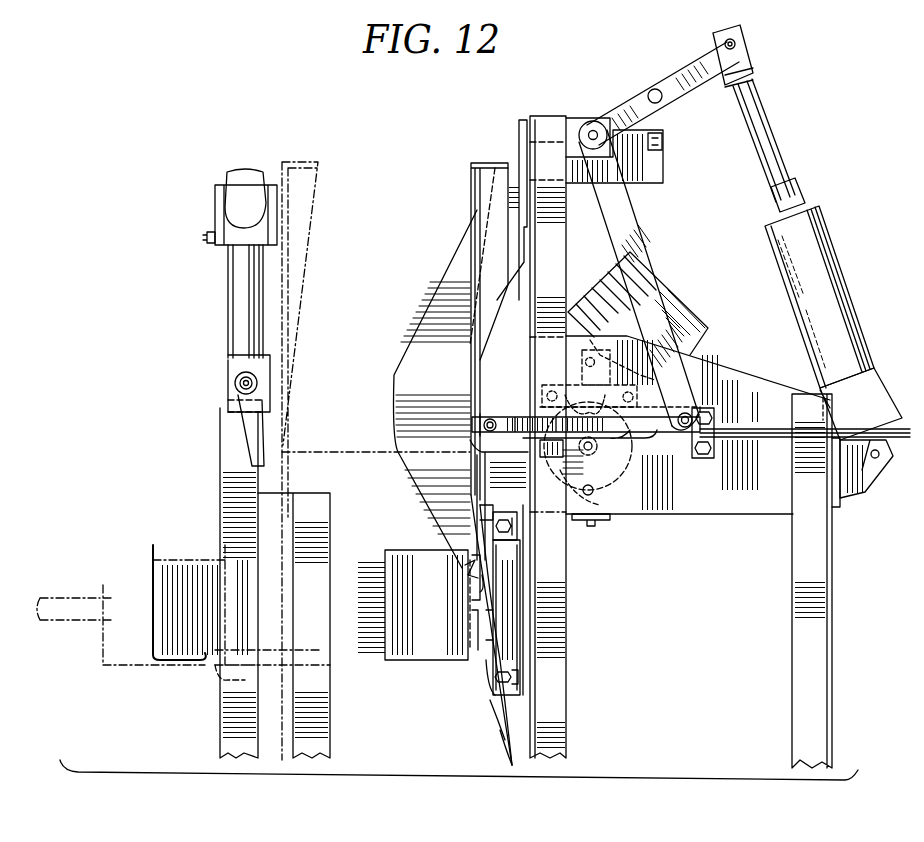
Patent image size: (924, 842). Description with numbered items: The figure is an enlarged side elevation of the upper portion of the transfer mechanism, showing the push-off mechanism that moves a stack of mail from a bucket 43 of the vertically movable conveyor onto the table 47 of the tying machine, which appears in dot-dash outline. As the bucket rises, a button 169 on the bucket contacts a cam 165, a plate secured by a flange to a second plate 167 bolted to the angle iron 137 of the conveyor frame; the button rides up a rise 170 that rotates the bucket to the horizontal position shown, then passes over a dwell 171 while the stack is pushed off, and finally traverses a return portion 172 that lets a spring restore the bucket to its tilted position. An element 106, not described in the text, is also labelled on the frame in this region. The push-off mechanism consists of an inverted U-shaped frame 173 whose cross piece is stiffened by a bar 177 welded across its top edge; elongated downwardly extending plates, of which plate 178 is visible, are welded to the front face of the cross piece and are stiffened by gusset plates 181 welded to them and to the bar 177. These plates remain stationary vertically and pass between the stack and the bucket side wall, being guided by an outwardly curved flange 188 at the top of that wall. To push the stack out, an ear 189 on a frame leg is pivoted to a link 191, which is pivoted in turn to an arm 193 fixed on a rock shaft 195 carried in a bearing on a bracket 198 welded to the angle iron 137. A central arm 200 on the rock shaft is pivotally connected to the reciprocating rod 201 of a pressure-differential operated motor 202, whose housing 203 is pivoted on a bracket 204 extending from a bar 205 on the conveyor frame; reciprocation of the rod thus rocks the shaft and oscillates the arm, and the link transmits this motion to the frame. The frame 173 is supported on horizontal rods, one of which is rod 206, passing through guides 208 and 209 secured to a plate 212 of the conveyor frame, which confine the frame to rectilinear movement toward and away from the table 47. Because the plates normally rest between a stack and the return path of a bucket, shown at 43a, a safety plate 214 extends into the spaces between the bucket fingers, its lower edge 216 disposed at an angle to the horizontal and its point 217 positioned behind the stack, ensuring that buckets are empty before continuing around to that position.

The bucket 43 is at (447, 622).
The bucket in return-path position 43a is at (665, 288).
The table 47 is at (312, 656).
The plate 106 is at (520, 655).
The angle iron 137 is at (548, 712).
The cam 165 is at (479, 710).
The second plate 167 is at (515, 595).
The button 169 is at (530, 565).
The rise 170 is at (498, 738).
The dwell 171 is at (512, 650).
The return portion 172 is at (510, 445).
The inverted U-shaped frame 173 is at (470, 266).
The bar 177 is at (318, 164).
The elongated downwardly extending plate 178 is at (428, 490).
The gusset plate 181 is at (492, 215).
The outwardly curved flange 188 is at (470, 572).
The ear 189 is at (480, 420).
The link 191 is at (652, 440).
The arm 193 is at (620, 223).
The rock shaft 195 is at (594, 132).
The bracket 198 is at (577, 128).
The arm 200 is at (683, 40).
The reciprocating rod 201 is at (772, 136).
The pressure-differential operated motor 202 is at (822, 272).
The housing 203 is at (884, 395).
The bracket 204 is at (868, 482).
The bar 205 is at (840, 500).
The rod 206 is at (768, 431).
The guide 208 is at (600, 482).
The guide 209 is at (718, 455).
The plate 212 is at (735, 510).
The safety plate 214 is at (426, 345).
The lower edge 216 is at (450, 512).
The point 217 is at (480, 580).